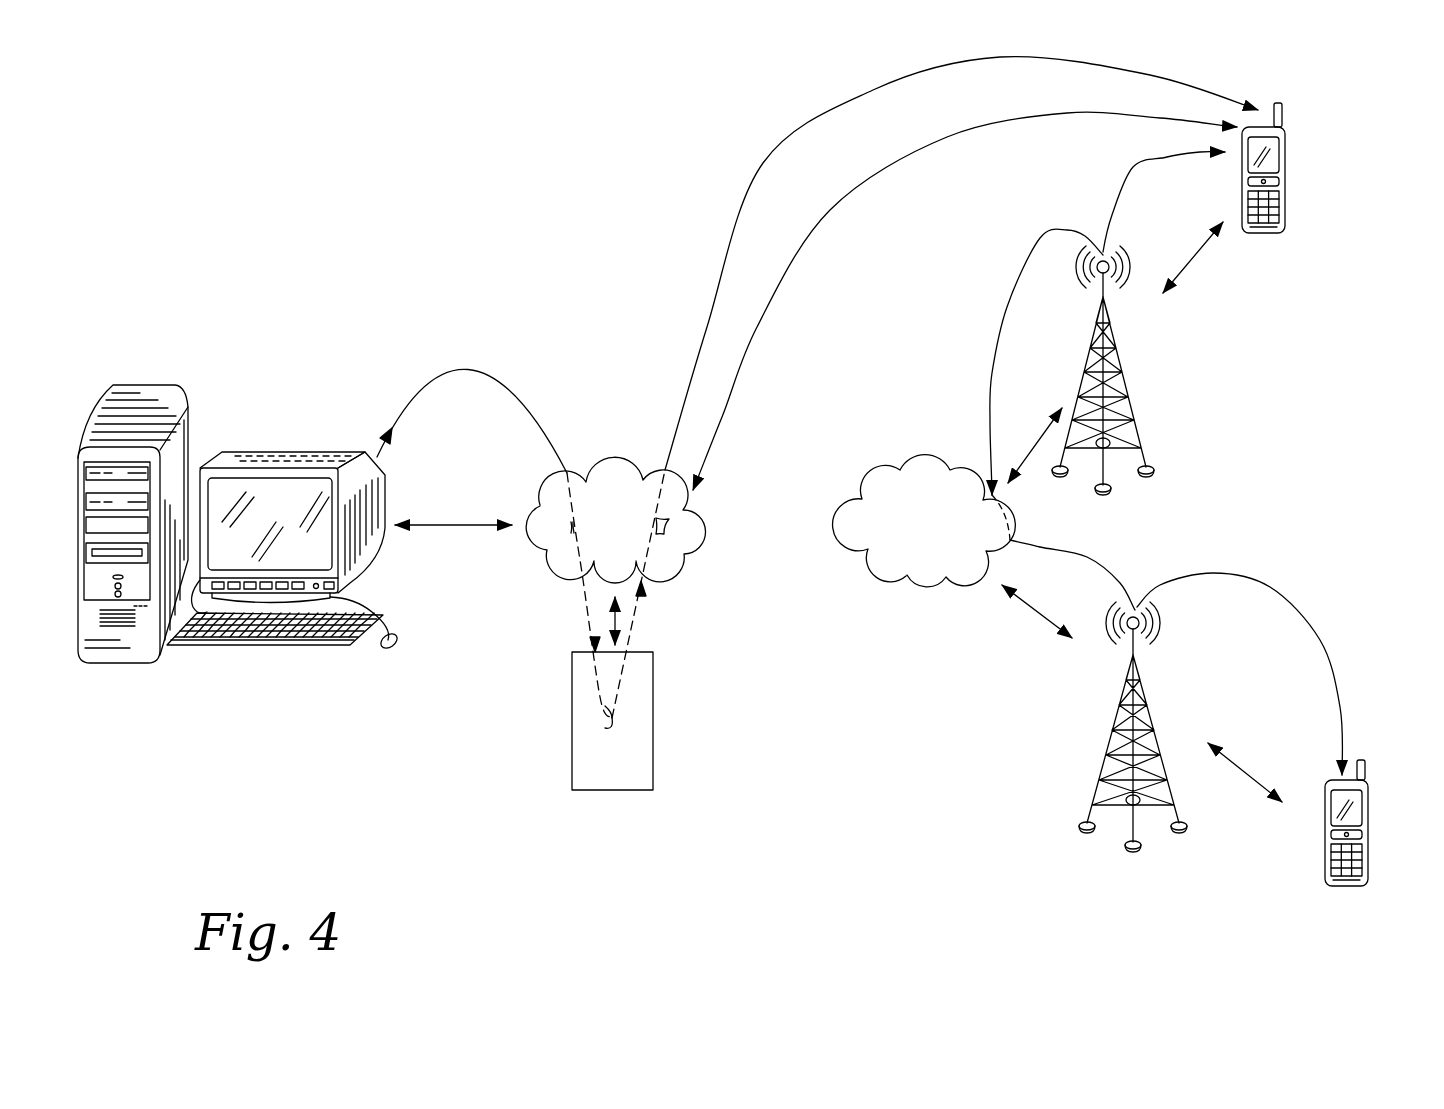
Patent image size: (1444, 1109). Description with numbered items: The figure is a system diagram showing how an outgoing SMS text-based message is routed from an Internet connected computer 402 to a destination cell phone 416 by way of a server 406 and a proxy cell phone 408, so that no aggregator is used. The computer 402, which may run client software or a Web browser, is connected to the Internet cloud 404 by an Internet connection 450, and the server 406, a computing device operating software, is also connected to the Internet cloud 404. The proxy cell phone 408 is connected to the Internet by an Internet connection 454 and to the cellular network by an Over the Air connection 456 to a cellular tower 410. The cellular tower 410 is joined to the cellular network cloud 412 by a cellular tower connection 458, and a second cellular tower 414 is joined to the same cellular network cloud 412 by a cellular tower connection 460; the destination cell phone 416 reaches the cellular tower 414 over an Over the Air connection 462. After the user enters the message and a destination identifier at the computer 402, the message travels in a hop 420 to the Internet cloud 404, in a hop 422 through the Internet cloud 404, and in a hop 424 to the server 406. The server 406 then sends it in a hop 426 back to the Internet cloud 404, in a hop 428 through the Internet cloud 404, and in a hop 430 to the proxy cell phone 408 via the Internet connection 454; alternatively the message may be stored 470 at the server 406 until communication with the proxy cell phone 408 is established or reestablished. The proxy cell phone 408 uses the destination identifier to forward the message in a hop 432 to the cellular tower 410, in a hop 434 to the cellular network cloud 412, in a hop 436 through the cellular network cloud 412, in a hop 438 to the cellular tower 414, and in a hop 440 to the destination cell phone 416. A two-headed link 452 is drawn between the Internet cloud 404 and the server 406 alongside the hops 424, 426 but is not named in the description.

The Internet connected computer 402 is at (153, 383).
The Internet cloud 404 is at (617, 458).
The server 406 is at (628, 790).
The proxy cell phone 408 is at (1283, 205).
The cellular tower 410 is at (1140, 420).
The cellular network cloud 412 is at (918, 592).
The cellular tower 414 is at (1102, 788).
The destination cell phone 416 is at (1368, 862).
The hop 420 is at (468, 367).
The hop 422 is at (578, 505).
The hop 424 is at (590, 612).
The hop 426 is at (633, 635).
The hop 428 is at (647, 545).
The hop 430 is at (873, 90).
The hop 432 is at (1125, 182).
The hop 434 is at (1040, 238).
The hop 436 is at (993, 513).
The hop 438 is at (1105, 565).
The hop 440 is at (1273, 587).
The Internet connection 450 is at (460, 527).
The bidirectional link 452 is at (614, 622).
The Internet connection 454 is at (947, 137).
The Over the Air connection 456 is at (1197, 260).
The cellular tower connection 458 is at (1040, 435).
The cellular tower connection 460 is at (1035, 613).
The Over the Air connection 462 is at (1242, 767).
The stored 470 is at (610, 720).